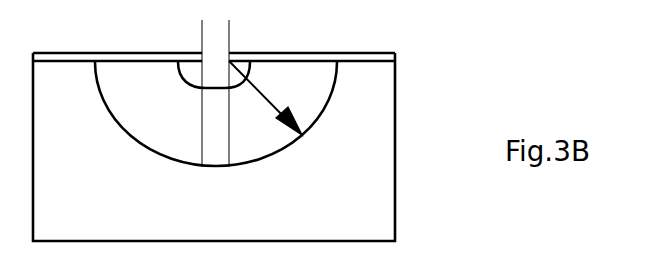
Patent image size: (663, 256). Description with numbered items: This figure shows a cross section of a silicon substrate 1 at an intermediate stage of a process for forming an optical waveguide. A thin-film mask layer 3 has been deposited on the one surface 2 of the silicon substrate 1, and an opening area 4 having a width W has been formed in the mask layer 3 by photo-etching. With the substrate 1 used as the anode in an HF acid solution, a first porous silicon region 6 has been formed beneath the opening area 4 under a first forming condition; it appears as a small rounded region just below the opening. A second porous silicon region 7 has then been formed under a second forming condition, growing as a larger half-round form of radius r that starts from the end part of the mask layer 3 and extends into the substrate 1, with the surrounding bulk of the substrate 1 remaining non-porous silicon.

The silicon substrate 1 is at (384, 168).
The surface 2 is at (397, 60).
The mask layer 3 is at (360, 52).
The opening area 4 is at (222, 13).
The first porous silicon region 6 is at (194, 70).
The second porous silicon region 7 is at (138, 82).